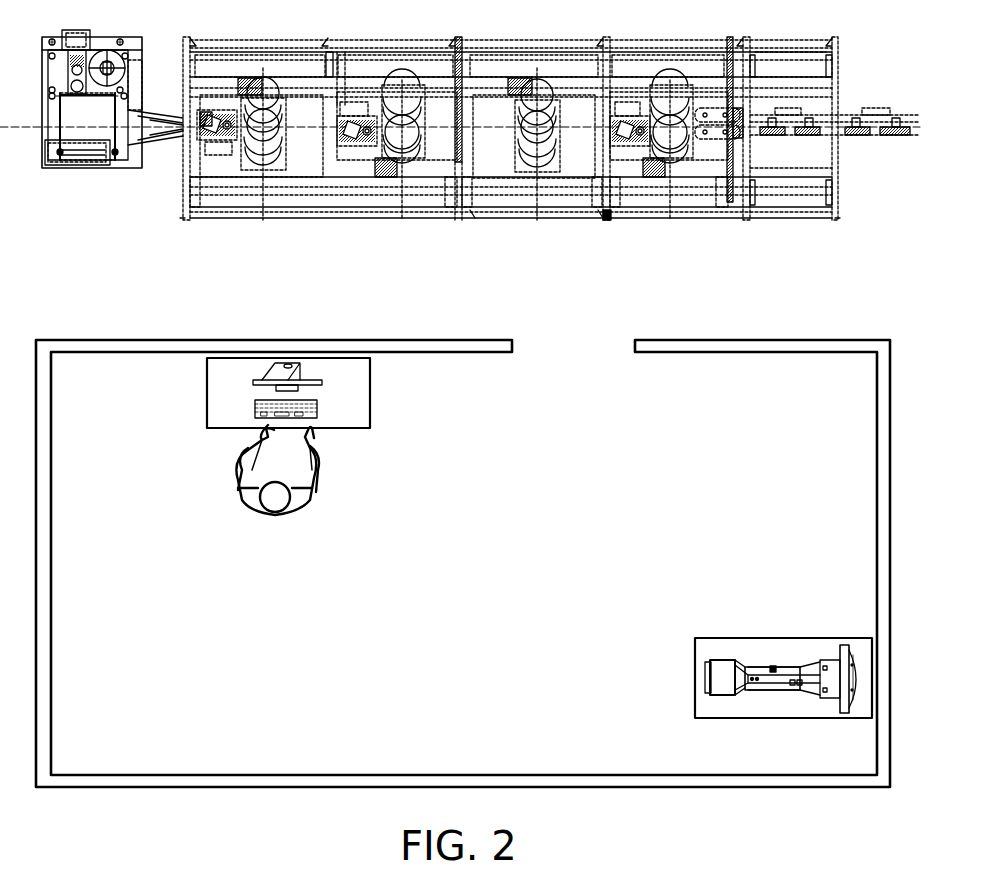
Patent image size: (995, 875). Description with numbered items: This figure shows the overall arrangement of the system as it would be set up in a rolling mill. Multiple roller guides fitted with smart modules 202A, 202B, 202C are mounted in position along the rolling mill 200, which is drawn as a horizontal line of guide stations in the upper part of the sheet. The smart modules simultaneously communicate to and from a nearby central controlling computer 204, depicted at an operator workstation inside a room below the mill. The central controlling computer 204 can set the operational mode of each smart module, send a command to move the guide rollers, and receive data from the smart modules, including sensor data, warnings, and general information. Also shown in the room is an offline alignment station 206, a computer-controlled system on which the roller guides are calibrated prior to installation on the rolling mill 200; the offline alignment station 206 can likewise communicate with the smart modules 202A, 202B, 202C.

The rolling mill 200 is at (490, 208).
The smart module 202A is at (219, 142).
The smart module 202B is at (358, 142).
The smart module 202C is at (627, 142).
The central controlling computer 204 is at (307, 393).
The offline alignment station 206 is at (775, 667).